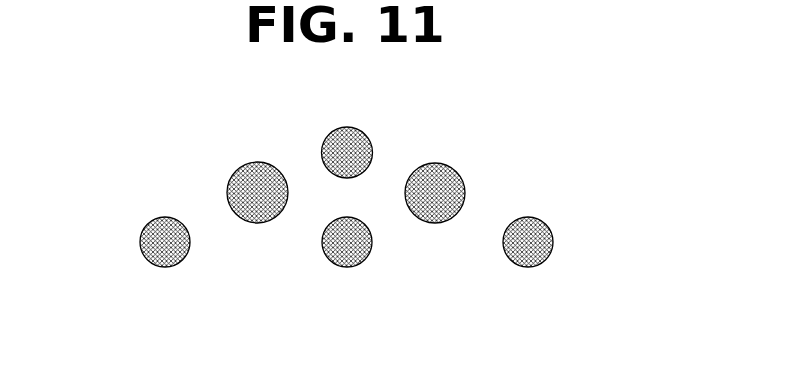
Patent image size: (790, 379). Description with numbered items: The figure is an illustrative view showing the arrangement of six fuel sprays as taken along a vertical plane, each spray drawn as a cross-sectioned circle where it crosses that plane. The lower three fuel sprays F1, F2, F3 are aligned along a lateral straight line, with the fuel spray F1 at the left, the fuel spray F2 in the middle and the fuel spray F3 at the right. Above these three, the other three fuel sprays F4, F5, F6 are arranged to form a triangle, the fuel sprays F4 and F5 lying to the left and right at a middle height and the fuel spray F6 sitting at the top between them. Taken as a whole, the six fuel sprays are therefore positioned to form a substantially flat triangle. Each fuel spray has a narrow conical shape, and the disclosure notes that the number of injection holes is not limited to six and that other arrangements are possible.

The fuel spray F1 is at (139, 243).
The fuel spray F2 is at (360, 260).
The fuel spray F3 is at (553, 242).
The fuel spray F4 is at (226, 187).
The fuel spray F5 is at (466, 188).
The fuel spray F6 is at (370, 143).